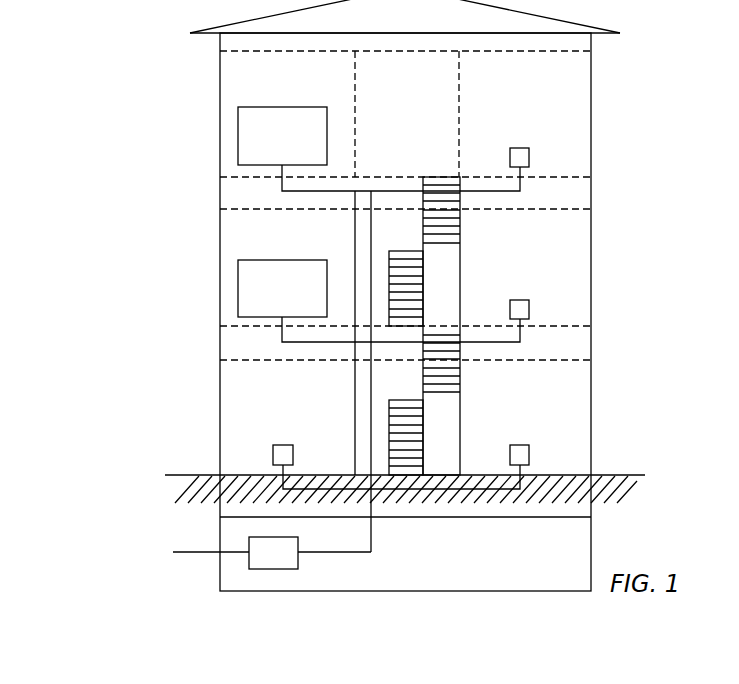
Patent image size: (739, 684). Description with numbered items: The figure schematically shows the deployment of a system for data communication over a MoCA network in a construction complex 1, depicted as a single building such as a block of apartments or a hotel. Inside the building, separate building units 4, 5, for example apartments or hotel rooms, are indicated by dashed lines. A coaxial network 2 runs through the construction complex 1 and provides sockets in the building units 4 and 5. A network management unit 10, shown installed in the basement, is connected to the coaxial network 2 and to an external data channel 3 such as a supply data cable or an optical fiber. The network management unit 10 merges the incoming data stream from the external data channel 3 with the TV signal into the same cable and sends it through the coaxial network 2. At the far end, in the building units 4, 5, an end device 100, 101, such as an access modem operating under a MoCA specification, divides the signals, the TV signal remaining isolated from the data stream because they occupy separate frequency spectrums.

The construction complex 1 is at (157, 91).
The coaxial network 2 is at (556, 561).
The external data channel 3 is at (118, 607).
The building unit 4 is at (293, 101).
The building unit 5 is at (293, 259).
The network management unit 10 is at (374, 669).
The end device 100 is at (322, 161).
The end device 101 is at (322, 314).